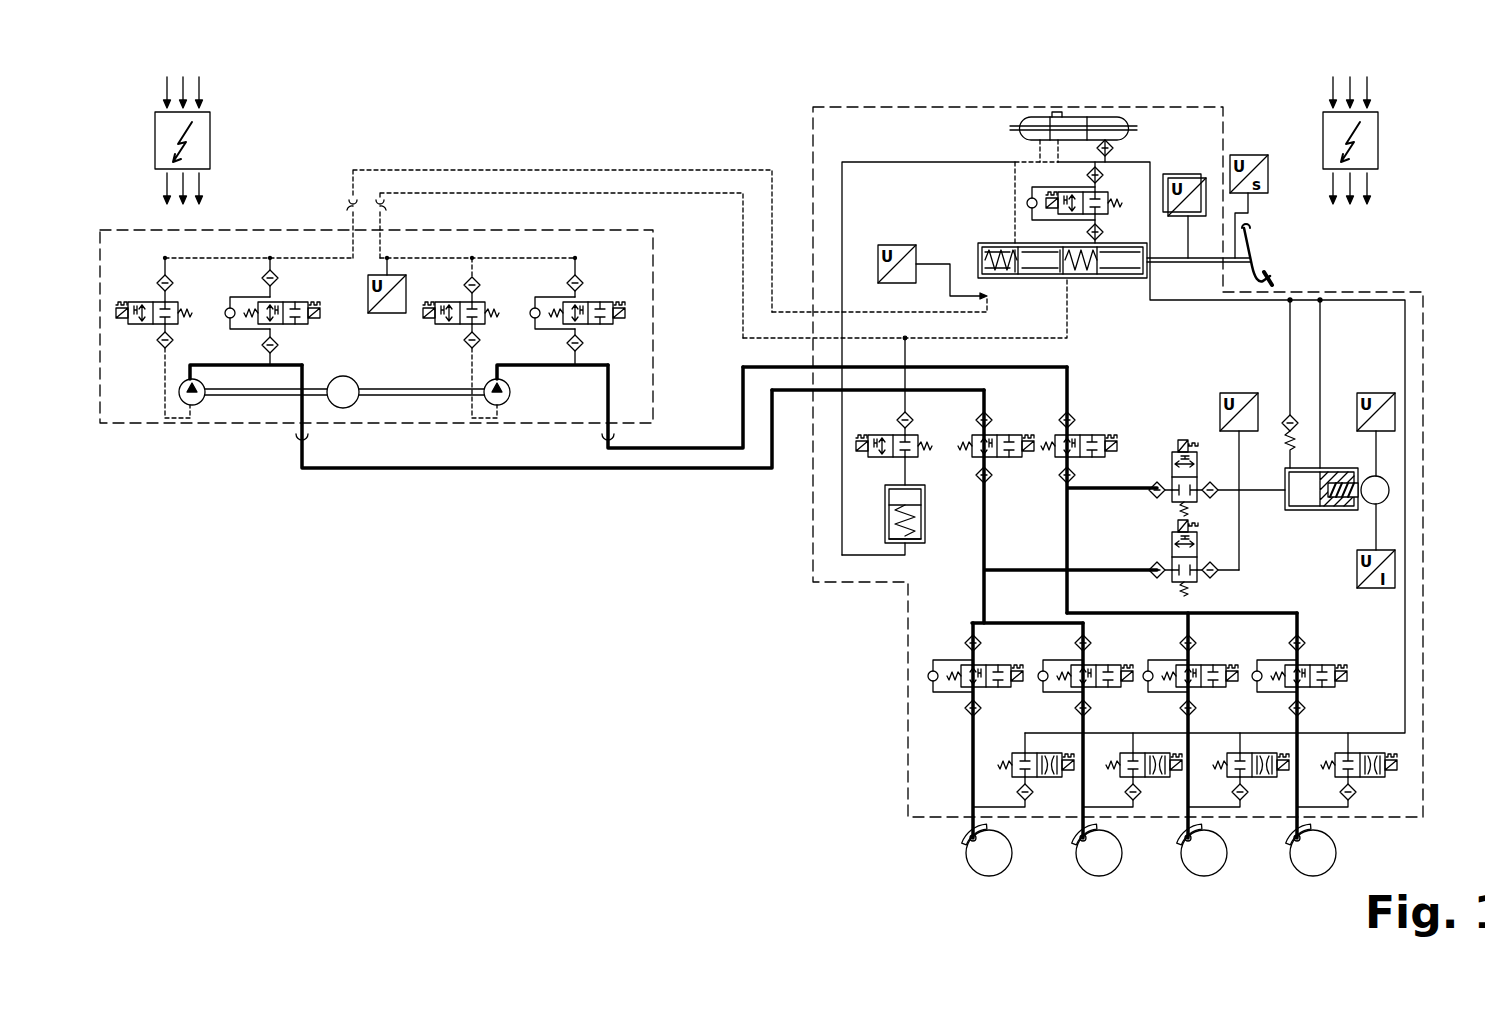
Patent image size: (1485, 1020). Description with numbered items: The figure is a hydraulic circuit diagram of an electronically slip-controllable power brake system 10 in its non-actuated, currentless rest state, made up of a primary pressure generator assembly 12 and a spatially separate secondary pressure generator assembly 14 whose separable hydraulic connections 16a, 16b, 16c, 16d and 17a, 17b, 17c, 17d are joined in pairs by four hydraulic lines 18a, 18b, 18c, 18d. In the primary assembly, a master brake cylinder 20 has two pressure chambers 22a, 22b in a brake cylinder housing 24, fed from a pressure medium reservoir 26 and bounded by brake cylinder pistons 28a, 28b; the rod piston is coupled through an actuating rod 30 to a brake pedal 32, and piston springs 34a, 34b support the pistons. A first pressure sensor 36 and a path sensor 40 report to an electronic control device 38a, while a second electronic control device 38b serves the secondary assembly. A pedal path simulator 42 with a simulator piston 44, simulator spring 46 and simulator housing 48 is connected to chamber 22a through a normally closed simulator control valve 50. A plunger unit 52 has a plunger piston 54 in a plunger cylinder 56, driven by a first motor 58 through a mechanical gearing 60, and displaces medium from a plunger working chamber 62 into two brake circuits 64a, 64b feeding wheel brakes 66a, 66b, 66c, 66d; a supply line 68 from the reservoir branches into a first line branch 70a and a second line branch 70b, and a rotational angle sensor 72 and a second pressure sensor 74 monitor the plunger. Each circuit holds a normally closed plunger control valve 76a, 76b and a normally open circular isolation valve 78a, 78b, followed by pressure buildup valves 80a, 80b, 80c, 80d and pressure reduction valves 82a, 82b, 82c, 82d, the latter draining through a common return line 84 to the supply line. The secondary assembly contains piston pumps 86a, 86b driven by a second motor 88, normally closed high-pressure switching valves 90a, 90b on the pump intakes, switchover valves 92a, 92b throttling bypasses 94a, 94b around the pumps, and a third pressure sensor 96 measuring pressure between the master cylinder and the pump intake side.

The power brake system 10 is at (712, 146).
The primary pressure generator assembly 12 is at (812, 541).
The secondary pressure generator assembly 14 is at (140, 425).
The hydraulic connection 16a is at (770, 312).
The hydraulic connection 16b is at (743, 338).
The hydraulic connection 16c is at (743, 367).
The hydraulic connection 16d is at (772, 390).
The hydraulic connection 17a is at (346, 205).
The hydraulic connection 17b is at (388, 207).
The hydraulic connection 17c is at (603, 442).
The hydraulic connection 17d is at (300, 443).
The hydraulic line 18a is at (470, 172).
The hydraulic line 18b is at (548, 193).
The hydraulic line 18c is at (655, 450).
The hydraulic line 18d is at (470, 470).
The master brake cylinder 20 is at (972, 242).
The pressure chamber 22a is at (1078, 278).
The pressure chamber 22b is at (1003, 243).
The brake cylinder housing 24 is at (978, 262).
The pressure medium reservoir 26 is at (1122, 117).
The first brake cylinder piston 28a is at (1116, 272).
The second brake cylinder piston 28b is at (1033, 274).
The actuating rod 30 is at (1200, 263).
The brake pedal 32 is at (1262, 248).
The piston spring 34a is at (1060, 278).
The piston spring 34b is at (1010, 243).
The first pressure sensor 36 is at (890, 245).
The electronic control device 38a is at (1380, 140).
The second electronic control device 38b is at (213, 140).
The path sensor 40 is at (1188, 178).
The pedal path simulator 42 is at (914, 545).
The simulator piston 44 is at (920, 498).
The simulator spring 46 is at (889, 520).
The simulator housing 48 is at (925, 528).
The simulator control valve 50 is at (915, 435).
The plunger unit 52 is at (1333, 520).
The plunger piston 54 is at (1338, 470).
The plunger cylinder 56 is at (1287, 500).
The first motor 58 is at (1386, 478).
The mechanical gearing 60 is at (1345, 507).
The plunger working chamber 62 is at (1300, 506).
The brake circuit 64a is at (1069, 525).
The brake circuit 64b is at (986, 525).
The wheel brake 66a is at (1309, 878).
The wheel brake 66b is at (1200, 878).
The wheel brake 66c is at (1095, 878).
The wheel brake 66d is at (985, 878).
The supply line 68 is at (1146, 301).
The first line branch 70a is at (1290, 330).
The second line branch 70b is at (1320, 330).
The rotational angle sensor 72 is at (1395, 410).
The second pressure sensor 74 is at (1220, 395).
The plunger control valve 76a is at (1172, 455).
The plunger control valve 76b is at (1198, 580).
The circular isolation valve 78a is at (1085, 436).
The circular isolation valve 78b is at (1000, 436).
The pressure buildup valve 80a is at (1328, 689).
The pressure buildup valve 80b is at (1220, 689).
The pressure buildup valve 80c is at (1115, 689).
The pressure buildup valve 80d is at (1005, 689).
The pressure reduction valve 82a is at (1359, 805).
The pressure reduction valve 82b is at (1250, 805).
The pressure reduction valve 82c is at (1143, 805).
The pressure reduction valve 82d is at (1035, 805).
The return line 84 is at (1424, 636).
The piston pump 86a is at (510, 392).
The piston pump 86b is at (200, 406).
The second motor 88 is at (343, 376).
The high-pressure switching valve 90a is at (432, 325).
The high-pressure switching valve 90b is at (145, 302).
The switchover valve 92a is at (595, 303).
The switchover valve 92b is at (290, 303).
The bypass 94a is at (583, 270).
The bypass 94b is at (268, 268).
The third pressure sensor 96 is at (385, 315).